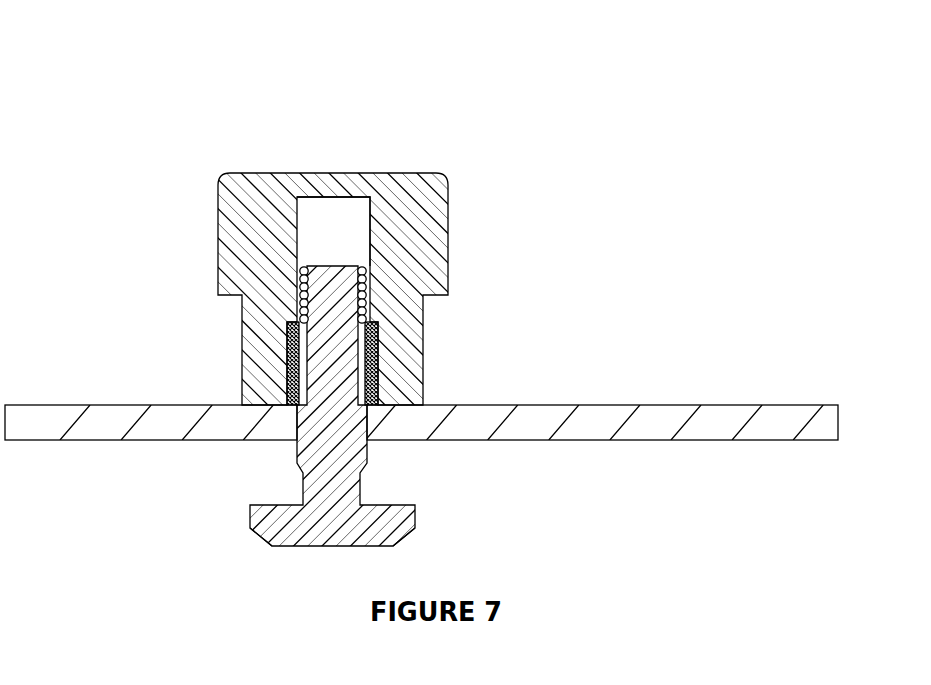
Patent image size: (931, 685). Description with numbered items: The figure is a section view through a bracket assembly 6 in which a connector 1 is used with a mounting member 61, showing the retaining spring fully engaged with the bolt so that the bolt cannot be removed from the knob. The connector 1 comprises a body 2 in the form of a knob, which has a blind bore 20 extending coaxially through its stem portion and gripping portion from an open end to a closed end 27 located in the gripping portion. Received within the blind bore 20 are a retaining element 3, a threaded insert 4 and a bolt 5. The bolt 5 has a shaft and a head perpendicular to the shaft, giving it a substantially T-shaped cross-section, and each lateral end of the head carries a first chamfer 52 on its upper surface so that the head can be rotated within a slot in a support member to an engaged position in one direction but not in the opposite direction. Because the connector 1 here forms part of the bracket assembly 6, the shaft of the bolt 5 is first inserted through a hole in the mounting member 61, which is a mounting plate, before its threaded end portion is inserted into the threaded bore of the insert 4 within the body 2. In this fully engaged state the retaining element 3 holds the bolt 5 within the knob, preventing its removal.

The connector 1 is at (462, 182).
The body 2 is at (367, 172).
The retaining element 3 is at (300, 304).
The threaded insert 4 is at (380, 371).
The bolt 5 is at (327, 547).
The bracket assembly 6 is at (681, 101).
The blind bore 20 is at (317, 250).
The closed end 27 is at (333, 201).
The first chamfer 52 is at (262, 533).
The mounting member 61 is at (661, 405).